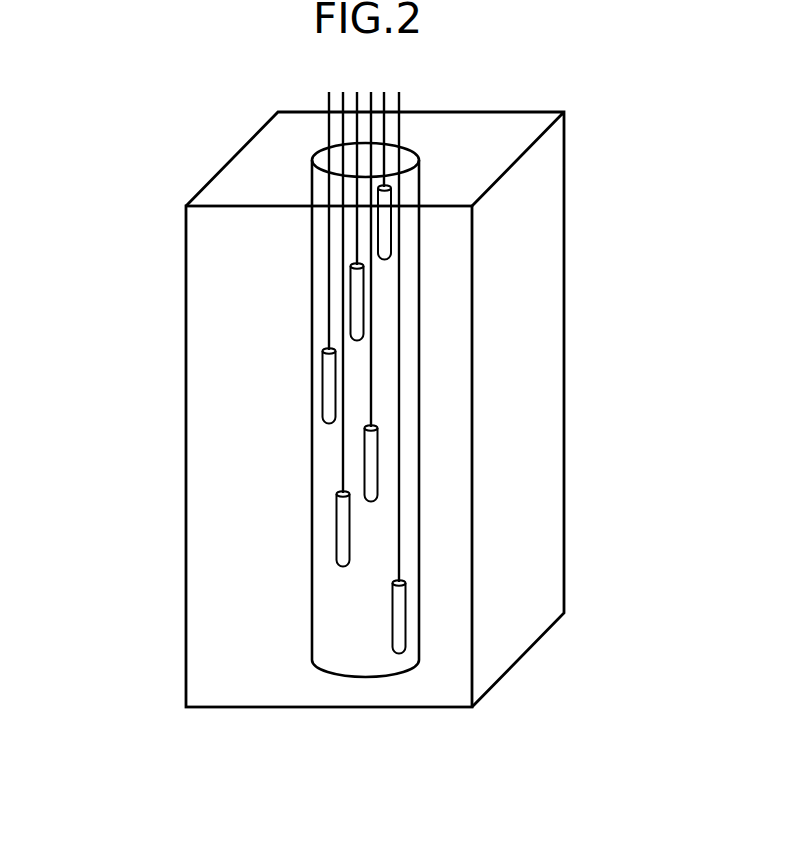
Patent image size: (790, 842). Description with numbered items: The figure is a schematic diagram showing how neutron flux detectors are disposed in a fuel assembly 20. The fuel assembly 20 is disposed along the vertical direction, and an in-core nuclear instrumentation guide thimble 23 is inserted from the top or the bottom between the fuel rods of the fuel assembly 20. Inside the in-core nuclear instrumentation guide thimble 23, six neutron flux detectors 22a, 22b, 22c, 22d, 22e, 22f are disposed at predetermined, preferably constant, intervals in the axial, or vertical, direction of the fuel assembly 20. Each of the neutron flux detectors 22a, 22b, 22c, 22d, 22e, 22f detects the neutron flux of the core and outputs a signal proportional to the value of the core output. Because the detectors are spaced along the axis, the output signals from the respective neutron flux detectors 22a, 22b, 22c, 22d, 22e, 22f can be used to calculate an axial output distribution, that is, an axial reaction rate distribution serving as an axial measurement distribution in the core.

The fuel assembly 20 is at (566, 206).
The neutron flux detector 22a is at (388, 246).
The neutron flux detector 22b is at (358, 328).
The neutron flux detector 22c is at (326, 408).
The neutron flux detector 22d is at (372, 463).
The neutron flux detector 22e is at (340, 542).
The neutron flux detector 22f is at (398, 628).
The in-core nuclear instrumentation guide thimble 23 is at (352, 662).